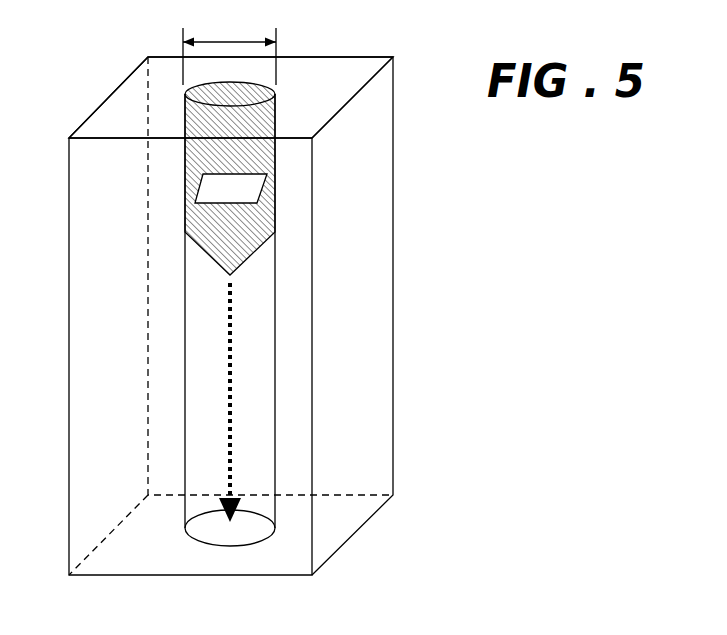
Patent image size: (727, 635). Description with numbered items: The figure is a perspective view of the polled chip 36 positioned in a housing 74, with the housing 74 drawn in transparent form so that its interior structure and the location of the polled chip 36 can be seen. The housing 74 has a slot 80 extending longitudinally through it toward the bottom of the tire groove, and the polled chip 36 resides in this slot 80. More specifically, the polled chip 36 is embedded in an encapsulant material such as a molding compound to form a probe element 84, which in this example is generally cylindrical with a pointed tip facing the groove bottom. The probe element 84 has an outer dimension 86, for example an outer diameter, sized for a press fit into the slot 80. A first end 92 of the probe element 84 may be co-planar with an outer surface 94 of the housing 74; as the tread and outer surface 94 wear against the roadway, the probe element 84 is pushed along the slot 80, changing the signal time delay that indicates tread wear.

The polled chip 36 is at (256, 185).
The housing 74 is at (387, 313).
The slot 80 is at (233, 537).
The probe element 84 is at (197, 158).
The outer dimension 86 is at (215, 40).
The first end 92 is at (263, 95).
The outer surface 94 is at (99, 118).